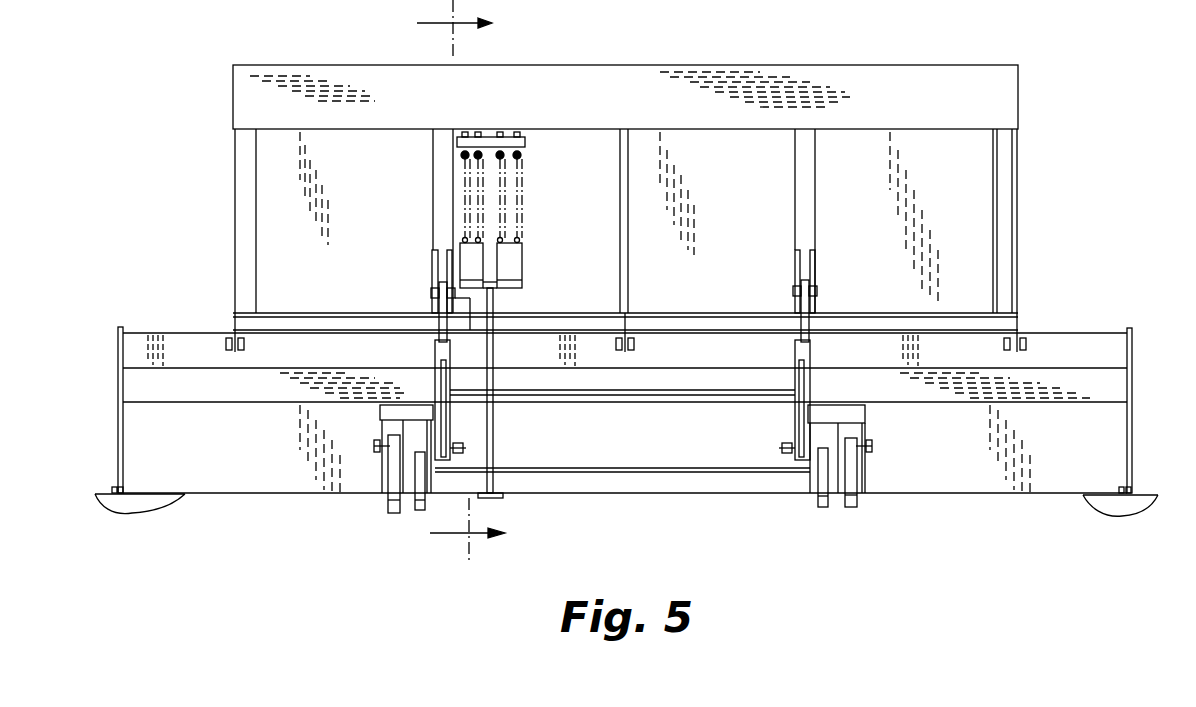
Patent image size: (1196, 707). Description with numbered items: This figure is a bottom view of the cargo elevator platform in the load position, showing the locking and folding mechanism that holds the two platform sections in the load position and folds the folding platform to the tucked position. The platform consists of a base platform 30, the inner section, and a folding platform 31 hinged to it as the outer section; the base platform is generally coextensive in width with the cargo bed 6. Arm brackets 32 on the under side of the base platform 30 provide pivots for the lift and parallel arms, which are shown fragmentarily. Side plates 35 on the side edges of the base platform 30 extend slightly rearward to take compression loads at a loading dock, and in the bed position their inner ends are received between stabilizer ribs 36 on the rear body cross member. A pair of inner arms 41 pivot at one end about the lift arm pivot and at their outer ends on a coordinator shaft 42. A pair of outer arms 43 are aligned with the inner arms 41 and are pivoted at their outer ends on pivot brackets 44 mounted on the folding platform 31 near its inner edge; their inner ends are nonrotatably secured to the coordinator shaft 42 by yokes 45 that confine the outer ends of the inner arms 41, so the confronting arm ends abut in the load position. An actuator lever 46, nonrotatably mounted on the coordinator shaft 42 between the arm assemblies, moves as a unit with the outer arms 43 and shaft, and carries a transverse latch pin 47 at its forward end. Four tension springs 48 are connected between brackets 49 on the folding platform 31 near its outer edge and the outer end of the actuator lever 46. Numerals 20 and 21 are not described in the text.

The cargo bed 6 is at (1105, 505).
The wheel mounting plate 20 is at (418, 513).
The wheel mounting plate 21 is at (386, 497).
The base platform 30 is at (1080, 328).
The folding platform 31 is at (820, 62).
The arm brackets 32 is at (865, 428).
The side plates 35 is at (118, 408).
The stabilizer ribs 36 is at (126, 490).
The inner arms 41 is at (441, 410).
The coordinator shaft 42 is at (636, 392).
The outer arms 43 is at (440, 322).
The pivot brackets 44 is at (432, 258).
The yokes 45 is at (450, 352).
The actuator lever 46 is at (493, 432).
The latch pin 47 is at (501, 497).
The tension springs 48 is at (518, 236).
The brackets 49 is at (492, 138).